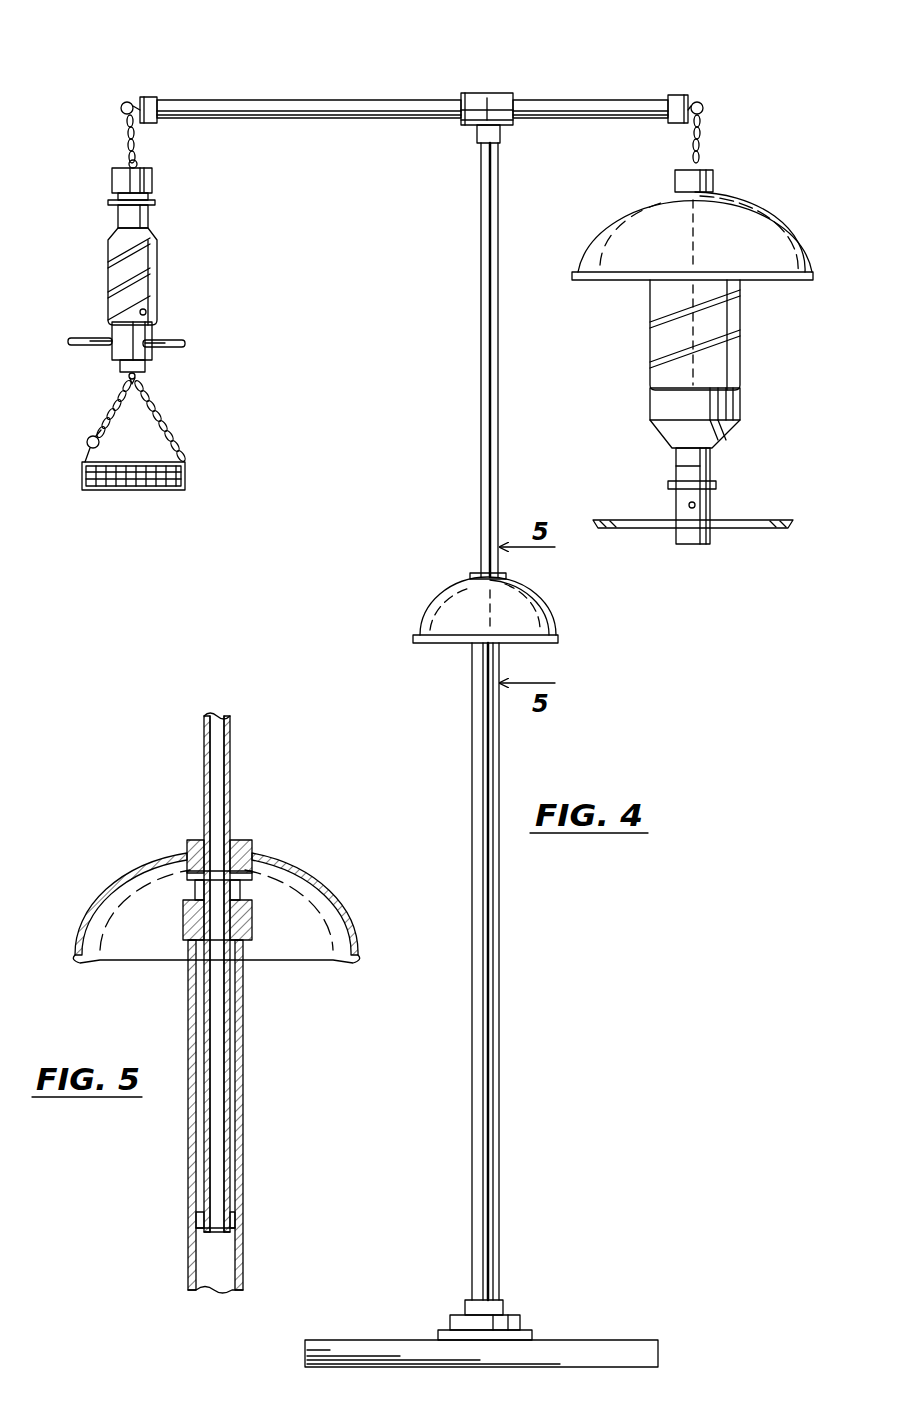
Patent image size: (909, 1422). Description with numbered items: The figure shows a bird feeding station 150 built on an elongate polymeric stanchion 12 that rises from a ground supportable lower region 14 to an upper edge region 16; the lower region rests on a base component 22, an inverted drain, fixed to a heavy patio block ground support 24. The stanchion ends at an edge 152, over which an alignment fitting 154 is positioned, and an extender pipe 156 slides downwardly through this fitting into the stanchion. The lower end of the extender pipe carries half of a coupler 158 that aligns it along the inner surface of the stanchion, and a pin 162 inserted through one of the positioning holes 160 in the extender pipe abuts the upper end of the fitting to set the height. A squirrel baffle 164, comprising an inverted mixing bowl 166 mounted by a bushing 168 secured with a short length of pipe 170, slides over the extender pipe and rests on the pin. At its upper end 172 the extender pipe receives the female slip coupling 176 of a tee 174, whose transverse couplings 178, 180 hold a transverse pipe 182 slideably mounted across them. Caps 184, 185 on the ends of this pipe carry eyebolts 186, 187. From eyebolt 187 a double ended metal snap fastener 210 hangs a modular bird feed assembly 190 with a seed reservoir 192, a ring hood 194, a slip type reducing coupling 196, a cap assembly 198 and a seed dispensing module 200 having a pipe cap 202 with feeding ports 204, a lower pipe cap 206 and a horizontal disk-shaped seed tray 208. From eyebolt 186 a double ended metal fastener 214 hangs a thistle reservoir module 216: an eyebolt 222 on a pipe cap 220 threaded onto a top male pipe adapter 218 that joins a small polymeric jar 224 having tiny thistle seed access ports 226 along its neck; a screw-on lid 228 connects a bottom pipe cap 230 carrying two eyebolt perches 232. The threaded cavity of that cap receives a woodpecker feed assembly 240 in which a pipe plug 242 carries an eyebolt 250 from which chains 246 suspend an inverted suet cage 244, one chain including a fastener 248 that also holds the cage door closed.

In FIG. 4, the stanchion 12 is at (497, 1055).
In FIG. 5, the stanchion 12 is at (242, 1152).
In FIG. 4, the ground supportable lower region 14 is at (535, 1290).
In FIG. 4, the upper edge region 16 is at (598, 685).
In FIG. 5, the upper edge region 16 is at (358, 848).
In FIG. 4, the base component 22 is at (520, 1325).
In FIG. 4, the ground support 24 is at (640, 1352).
In FIG. 4, the bird feeding station 150 is at (712, 75).
In FIG. 5, the edge 152 is at (190, 945).
In FIG. 5, the alignment fitting 154 is at (183, 912).
In FIG. 4, the extender pipe 156 is at (481, 395).
In FIG. 5, the extender pipe 156 is at (233, 785).
In FIG. 5, the coupler 158 is at (232, 1222).
In FIG. 5, the tube wall 160 is at (233, 752).
In FIG. 5, the pin 162 is at (250, 915).
In FIG. 4, the squirrel baffle 164 is at (435, 598).
In FIG. 5, the squirrel baffle 164 is at (342, 886).
In FIG. 4, the inverted mixing bowl 166 is at (545, 605).
In FIG. 5, the inverted mixing bowl 166 is at (140, 860).
In FIG. 5, the bushing 168 is at (245, 850).
In FIG. 5, the length of pipe 170 is at (250, 860).
In FIG. 4, the upper end 172 is at (528, 80).
In FIG. 4, the tee 174 is at (487, 98).
In FIG. 4, the female slip coupling 176 is at (501, 140).
In FIG. 4, the transverse coupling 178 is at (465, 95).
In FIG. 4, the transverse coupling 180 is at (515, 93).
In FIG. 4, the transverse pipe 182 is at (300, 100).
In FIG. 4, the cap 184 is at (150, 100).
In FIG. 4, the cap 185 is at (672, 98).
In FIG. 4, the eyebolt 186 is at (126, 100).
In FIG. 4, the eyebolt 187 is at (705, 106).
In FIG. 4, the modular bird feed assembly 190 is at (880, 338).
In FIG. 4, the seed reservoir 192 is at (738, 322).
In FIG. 4, the ring hood 194 is at (770, 215).
In FIG. 4, the slip type reducing coupling 196 is at (735, 402).
In FIG. 4, the cap assembly 198 is at (715, 182).
In FIG. 4, the seed dispensing module 200 is at (745, 500).
In FIG. 4, the pipe cap 202 is at (680, 490).
In FIG. 4, the feeding port 204 is at (690, 505).
In FIG. 4, the lower pipe cap 206 is at (690, 545).
In FIG. 4, the seed tray 208 is at (790, 530).
In FIG. 4, the double ended metal snap fastener 210 is at (703, 140).
In FIG. 4, the double ended metal fastener 214 is at (126, 140).
In FIG. 4, the thistle reservoir module 216 is at (240, 278).
In FIG. 4, the top male pipe adapter 218 is at (120, 212).
In FIG. 4, the pipe cap 220 is at (152, 183).
In FIG. 4, the eyebolt 222 is at (140, 163).
In FIG. 4, the jar 224 is at (155, 252).
In FIG. 4, the thistle seed access port 226 is at (150, 312).
In FIG. 4, the screw-on lid 228 is at (113, 325).
In FIG. 4, the bottom pipe cap 230 is at (120, 347).
In FIG. 4, the perches 232 is at (85, 340).
In FIG. 4, the feed assembly 240 is at (205, 475).
In FIG. 4, the pipe plug 242 is at (120, 372).
In FIG. 4, the suet cage 244 is at (182, 490).
In FIG. 4, the chains 246 is at (105, 410).
In FIG. 4, the fastener 248 is at (80, 452).
In FIG. 4, the eyebolt 250 is at (140, 378).